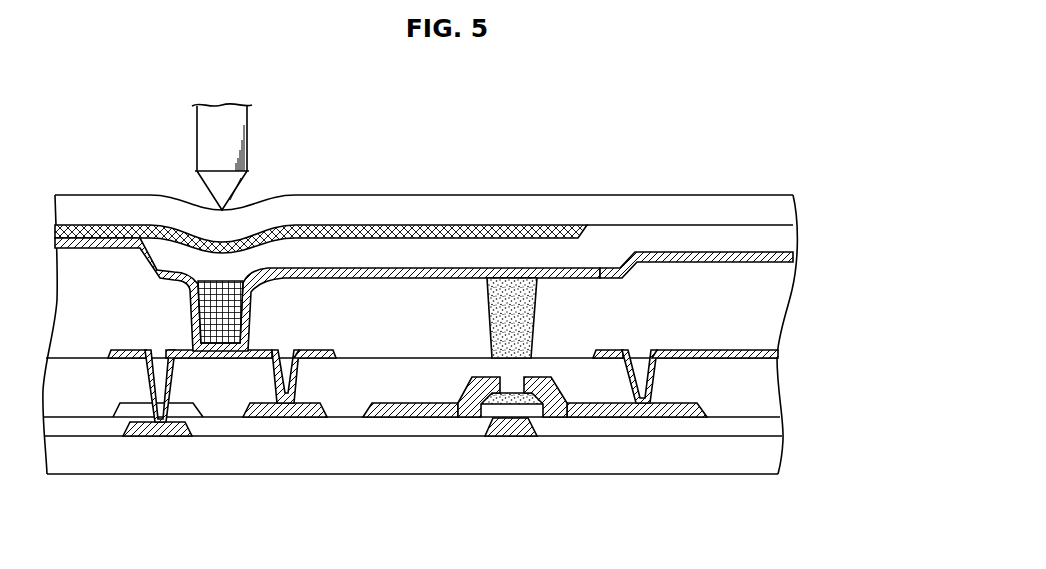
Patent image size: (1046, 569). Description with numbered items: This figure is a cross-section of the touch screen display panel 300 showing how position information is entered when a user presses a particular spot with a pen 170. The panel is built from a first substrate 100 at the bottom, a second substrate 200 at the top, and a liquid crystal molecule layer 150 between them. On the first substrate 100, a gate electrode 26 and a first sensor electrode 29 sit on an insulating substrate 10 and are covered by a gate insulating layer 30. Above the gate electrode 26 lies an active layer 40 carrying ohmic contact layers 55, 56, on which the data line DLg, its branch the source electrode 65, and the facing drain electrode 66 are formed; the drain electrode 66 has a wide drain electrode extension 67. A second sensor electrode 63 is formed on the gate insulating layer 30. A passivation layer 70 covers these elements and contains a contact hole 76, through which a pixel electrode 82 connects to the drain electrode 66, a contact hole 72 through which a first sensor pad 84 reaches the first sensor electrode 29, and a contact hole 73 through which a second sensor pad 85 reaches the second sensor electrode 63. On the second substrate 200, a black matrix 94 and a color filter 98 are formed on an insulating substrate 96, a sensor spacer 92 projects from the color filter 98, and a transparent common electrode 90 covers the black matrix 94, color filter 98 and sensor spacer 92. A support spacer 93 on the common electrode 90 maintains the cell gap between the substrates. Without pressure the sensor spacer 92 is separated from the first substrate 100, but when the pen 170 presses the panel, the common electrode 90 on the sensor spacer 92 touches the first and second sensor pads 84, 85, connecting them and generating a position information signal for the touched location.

The touch screen display panel 300 is at (760, 150).
The second substrate 200 is at (806, 195).
The liquid crystal molecule layer 150 is at (776, 312).
The first substrate 100 is at (806, 352).
The pen 170 is at (240, 117).
The black matrix 94 is at (323, 228).
The insulating substrate 96 is at (447, 200).
The color filter 98 is at (603, 230).
The common electrode 90 is at (705, 255).
The sensor spacer 92 is at (254, 308).
The support spacer 93 is at (535, 290).
The first sensor pad 84 is at (128, 348).
The contact hole 72 is at (158, 351).
The contact hole 73 is at (284, 351).
The second sensor pad 85 is at (330, 345).
The passivation layer 70 is at (412, 363).
The ohmic contact layer 55 is at (482, 377).
The ohmic contact layer 56 is at (541, 377).
The contact hole 76 is at (642, 351).
The pixel electrode 82 is at (708, 352).
The first sensor electrode 29 is at (130, 438).
The second sensor electrode 63 is at (312, 420).
The data line DLg is at (380, 418).
The source electrode 65 is at (477, 423).
The gate electrode 26 is at (496, 436).
The active layer 40 is at (523, 405).
The drain electrode 66 is at (552, 423).
The insulating substrate 10 is at (612, 466).
The gate insulating layer 30 is at (650, 425).
The drain electrode extension 67 is at (683, 418).